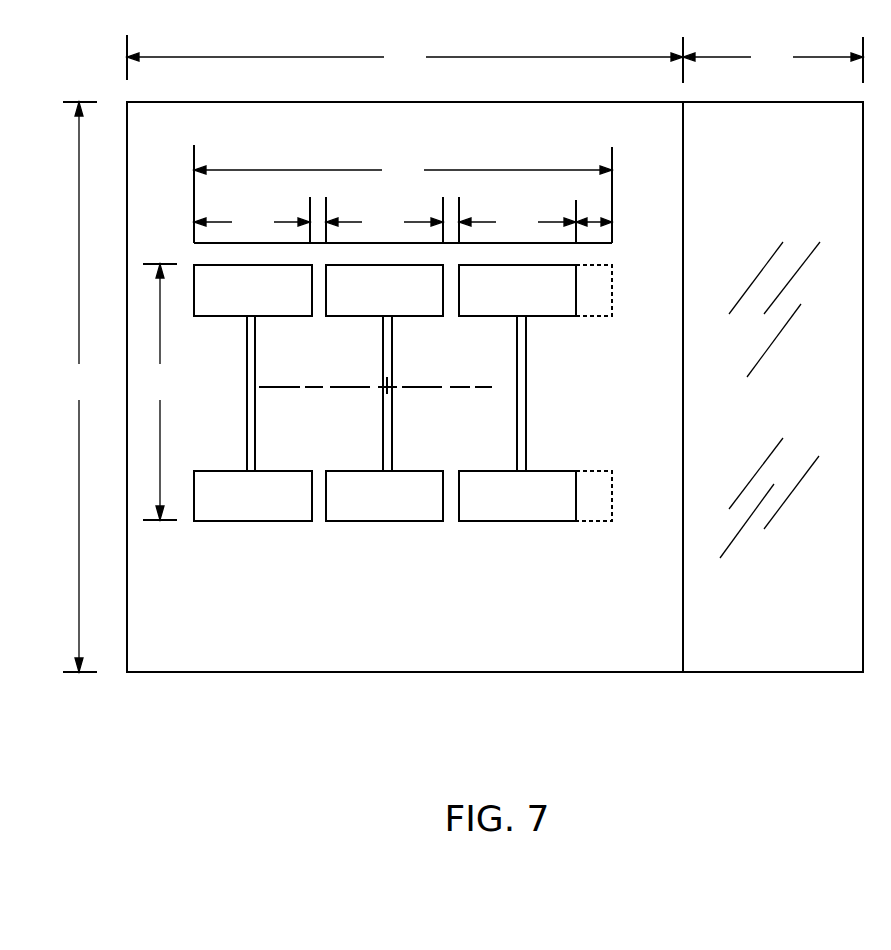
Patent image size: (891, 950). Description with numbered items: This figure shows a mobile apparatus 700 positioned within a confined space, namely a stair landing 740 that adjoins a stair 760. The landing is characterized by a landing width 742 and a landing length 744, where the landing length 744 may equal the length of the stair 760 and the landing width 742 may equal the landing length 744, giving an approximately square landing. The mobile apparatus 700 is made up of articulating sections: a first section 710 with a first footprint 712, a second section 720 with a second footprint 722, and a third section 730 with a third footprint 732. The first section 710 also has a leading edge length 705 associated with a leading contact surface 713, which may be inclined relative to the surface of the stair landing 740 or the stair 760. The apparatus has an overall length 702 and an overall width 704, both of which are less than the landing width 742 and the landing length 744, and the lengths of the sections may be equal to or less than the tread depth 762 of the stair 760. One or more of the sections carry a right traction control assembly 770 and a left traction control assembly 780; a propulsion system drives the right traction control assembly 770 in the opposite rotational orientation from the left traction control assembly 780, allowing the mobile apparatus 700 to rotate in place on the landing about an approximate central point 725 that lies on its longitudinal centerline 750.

The mobile apparatus 700 is at (545, 410).
The overall length 702 is at (403, 194).
The overall width 704 is at (161, 392).
The leading edge length 705 is at (612, 222).
The first section 710 is at (517, 393).
The first footprint 712 is at (517, 220).
The leading contact surface 713 is at (593, 317).
The second section 720 is at (384, 393).
The second footprint 722 is at (384, 220).
The central point 725 is at (393, 387).
The third section 730 is at (253, 393).
The third footprint 732 is at (252, 220).
The stair landing 740 is at (272, 672).
The landing width 742 is at (405, 59).
The landing length 744 is at (81, 387).
The longitudinal centerline 750 is at (275, 392).
The stair 760 is at (735, 672).
The tread depth 762 is at (773, 60).
The right traction control assembly 770 is at (454, 542).
The left traction control assembly 780 is at (272, 330).